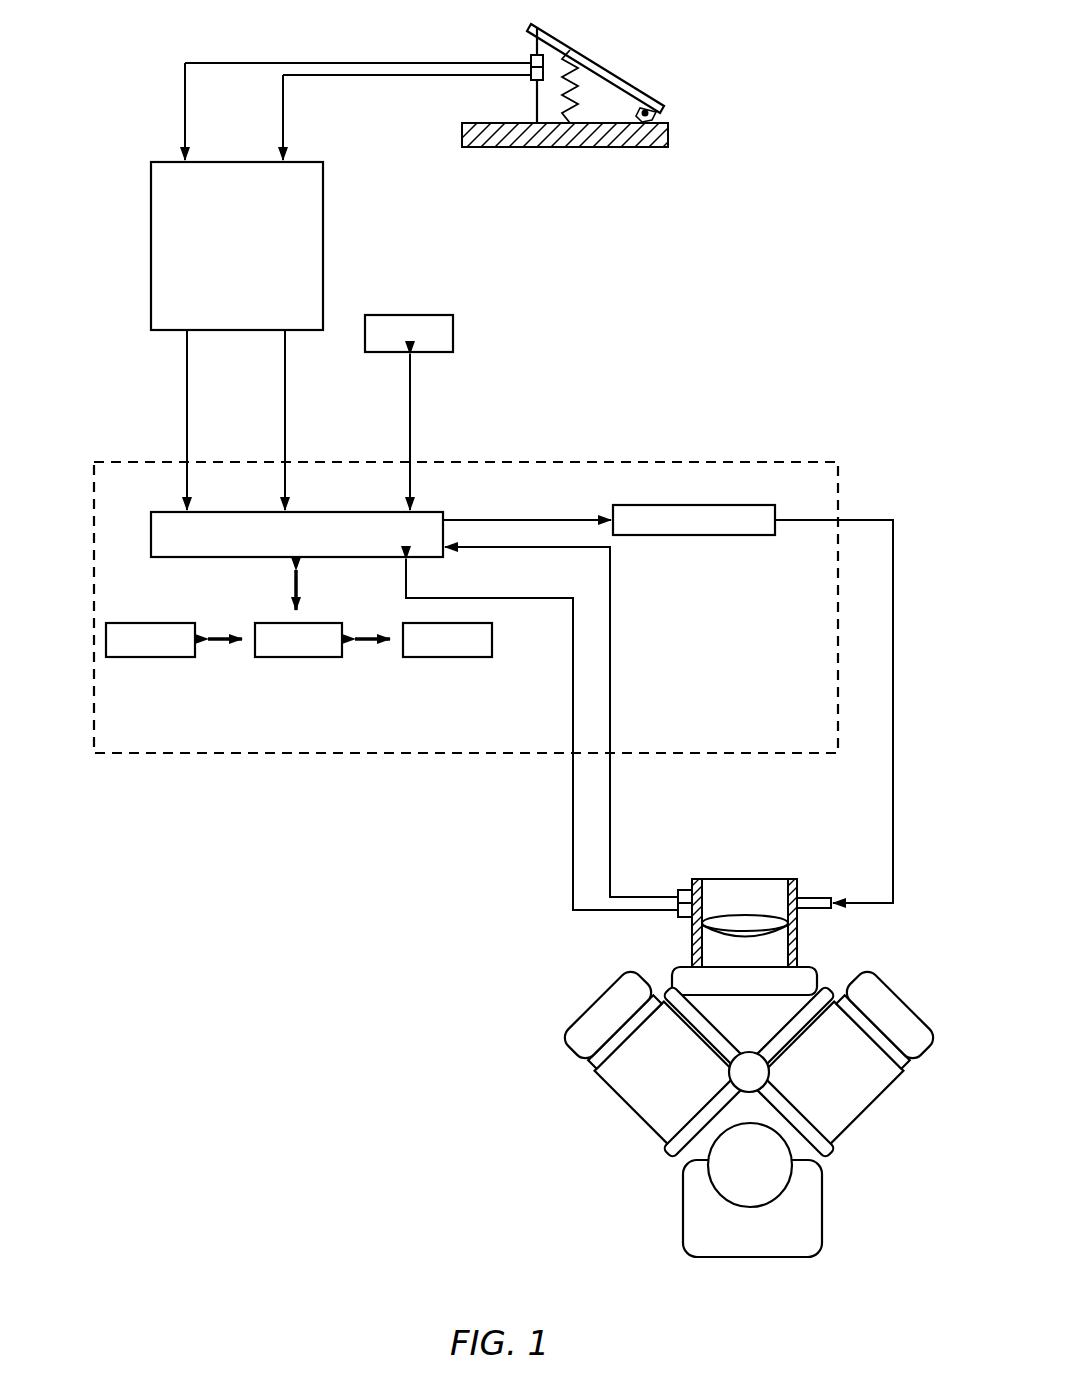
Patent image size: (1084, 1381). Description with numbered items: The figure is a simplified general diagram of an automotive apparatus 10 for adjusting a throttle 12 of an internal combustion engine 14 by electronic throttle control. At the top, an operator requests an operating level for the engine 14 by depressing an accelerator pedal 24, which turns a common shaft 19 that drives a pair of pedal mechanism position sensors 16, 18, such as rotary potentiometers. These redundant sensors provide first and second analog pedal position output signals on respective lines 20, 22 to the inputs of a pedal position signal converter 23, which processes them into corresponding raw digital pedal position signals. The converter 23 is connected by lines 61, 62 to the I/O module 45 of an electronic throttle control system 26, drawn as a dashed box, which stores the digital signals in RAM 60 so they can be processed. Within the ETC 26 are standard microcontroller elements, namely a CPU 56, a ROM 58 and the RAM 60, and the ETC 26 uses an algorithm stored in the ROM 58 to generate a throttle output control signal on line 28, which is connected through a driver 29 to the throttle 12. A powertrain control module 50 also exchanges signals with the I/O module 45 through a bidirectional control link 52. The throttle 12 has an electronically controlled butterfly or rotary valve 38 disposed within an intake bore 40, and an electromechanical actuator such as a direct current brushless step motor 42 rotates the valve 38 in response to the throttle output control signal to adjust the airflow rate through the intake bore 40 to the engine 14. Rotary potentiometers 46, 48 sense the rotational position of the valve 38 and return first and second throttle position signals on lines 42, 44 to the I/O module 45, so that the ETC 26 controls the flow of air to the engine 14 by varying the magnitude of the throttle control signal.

The apparatus 10 is at (631, 340).
The throttle 12 is at (770, 895).
The internal combustion engine 14 is at (826, 1208).
The pedal mechanism position sensor 16 is at (534, 54).
The pedal mechanism position sensor 18 is at (530, 62).
The common shaft 19 is at (535, 117).
The line 20 is at (187, 140).
The line 22 is at (285, 150).
The pedal position signal converter 23 is at (324, 252).
The accelerator pedal 24 is at (597, 58).
The electronic throttle control system 26 is at (163, 450).
The line 28 is at (497, 519).
The driver 29 is at (690, 536).
The valve 38 is at (745, 920).
The intake bore 40 is at (697, 878).
The step motor 42 is at (612, 692).
The line 44 is at (572, 822).
The I/O module 45 is at (212, 558).
The rotary potentiometer 46 is at (683, 890).
The rotary potentiometer 48 is at (683, 917).
The powertrain control module 50 is at (416, 314).
The bidirectional control link 52 is at (412, 420).
The CPU 56 is at (330, 658).
The ROM 58 is at (185, 658).
The RAM 60 is at (480, 658).
The line 61 is at (188, 436).
The line 62 is at (286, 436).